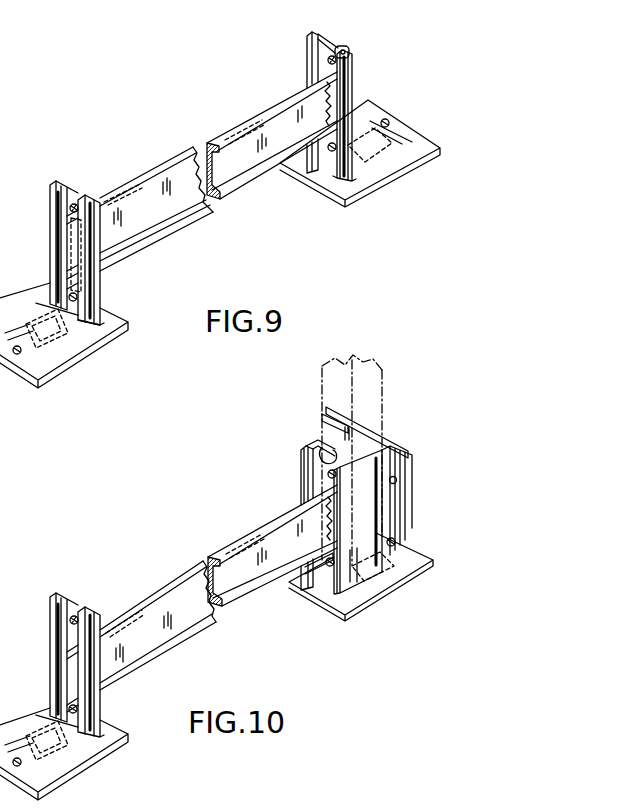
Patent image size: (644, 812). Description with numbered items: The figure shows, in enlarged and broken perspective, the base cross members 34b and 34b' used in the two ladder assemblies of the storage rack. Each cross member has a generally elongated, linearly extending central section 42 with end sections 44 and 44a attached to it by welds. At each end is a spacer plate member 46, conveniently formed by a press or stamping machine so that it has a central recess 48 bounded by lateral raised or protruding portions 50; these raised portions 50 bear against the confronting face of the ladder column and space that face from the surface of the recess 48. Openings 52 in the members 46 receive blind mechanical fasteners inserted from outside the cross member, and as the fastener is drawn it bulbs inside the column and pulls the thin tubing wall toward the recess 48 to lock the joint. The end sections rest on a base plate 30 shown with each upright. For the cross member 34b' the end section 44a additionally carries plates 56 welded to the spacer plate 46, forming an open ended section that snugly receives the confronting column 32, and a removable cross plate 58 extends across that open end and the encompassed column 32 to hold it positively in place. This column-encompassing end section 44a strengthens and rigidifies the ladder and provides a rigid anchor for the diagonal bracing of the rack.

In FIG. 9, the base plate 30 is at (48, 318).
In FIG. 10, the base plate 30 is at (60, 763).
In FIG. 9, the column 32 is at (368, 158).
In FIG. 10, the column 32 is at (378, 368).
In FIG. 9, the base cross member 34b is at (140, 218).
In FIG. 10, the base cross member 34b' is at (141, 620).
In FIG. 9, the central section 42 is at (243, 157).
In FIG. 10, the central section 42 is at (243, 570).
In FIG. 9, the end section 44 is at (100, 289).
In FIG. 10, the end section 44 is at (52, 616).
In FIG. 9, the end section 44a is at (352, 92).
In FIG. 10, the end section 44a is at (373, 513).
In FIG. 9, the spacer plate member 46 is at (103, 311).
In FIG. 10, the spacer plate member 46 is at (310, 465).
In FIG. 9, the central recess 48 is at (72, 272).
In FIG. 10, the central recess 48 is at (333, 447).
In FIG. 9, the raised portions 50 is at (52, 204).
In FIG. 10, the raised portions 50 is at (55, 672).
In FIG. 9, the openings 52 is at (76, 206).
In FIG. 10, the openings 52 is at (76, 617).
In FIG. 10, the plates 56 is at (334, 428).
In FIG. 10, the cross plate 58 is at (368, 420).